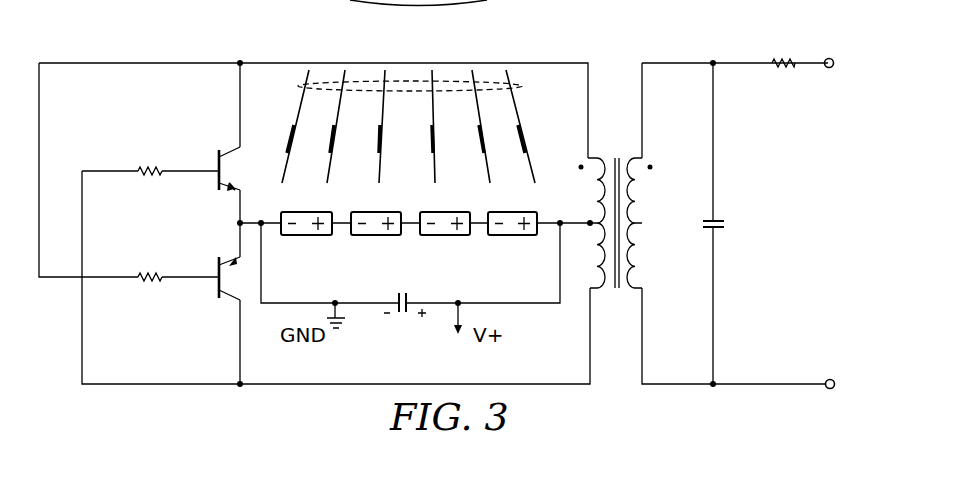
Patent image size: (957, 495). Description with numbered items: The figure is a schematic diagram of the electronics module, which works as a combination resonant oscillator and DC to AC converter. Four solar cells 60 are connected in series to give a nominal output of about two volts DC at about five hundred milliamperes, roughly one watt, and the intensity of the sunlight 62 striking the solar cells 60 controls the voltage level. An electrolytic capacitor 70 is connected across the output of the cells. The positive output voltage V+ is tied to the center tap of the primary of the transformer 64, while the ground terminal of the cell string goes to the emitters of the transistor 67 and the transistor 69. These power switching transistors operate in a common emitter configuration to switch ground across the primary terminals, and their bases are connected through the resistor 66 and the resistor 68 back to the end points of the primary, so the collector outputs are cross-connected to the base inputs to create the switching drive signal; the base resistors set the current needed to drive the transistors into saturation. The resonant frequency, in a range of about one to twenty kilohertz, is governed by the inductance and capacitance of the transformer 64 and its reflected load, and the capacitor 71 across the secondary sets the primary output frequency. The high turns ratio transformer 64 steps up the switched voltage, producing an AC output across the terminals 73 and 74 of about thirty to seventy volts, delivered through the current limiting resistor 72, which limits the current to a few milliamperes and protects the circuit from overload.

The solar cell 60 is at (515, 262).
The sunlight 62 is at (520, 87).
The transformer 64 is at (616, 152).
The resistor 66 is at (142, 166).
The transistor 67 is at (217, 157).
The resistor 68 is at (142, 274).
The transistor 69 is at (217, 290).
The electrolytic capacitor 70 is at (402, 322).
The capacitor 71 is at (727, 224).
The resistor 72 is at (777, 54).
The output terminal 73 is at (831, 56).
The output terminal 74 is at (833, 376).